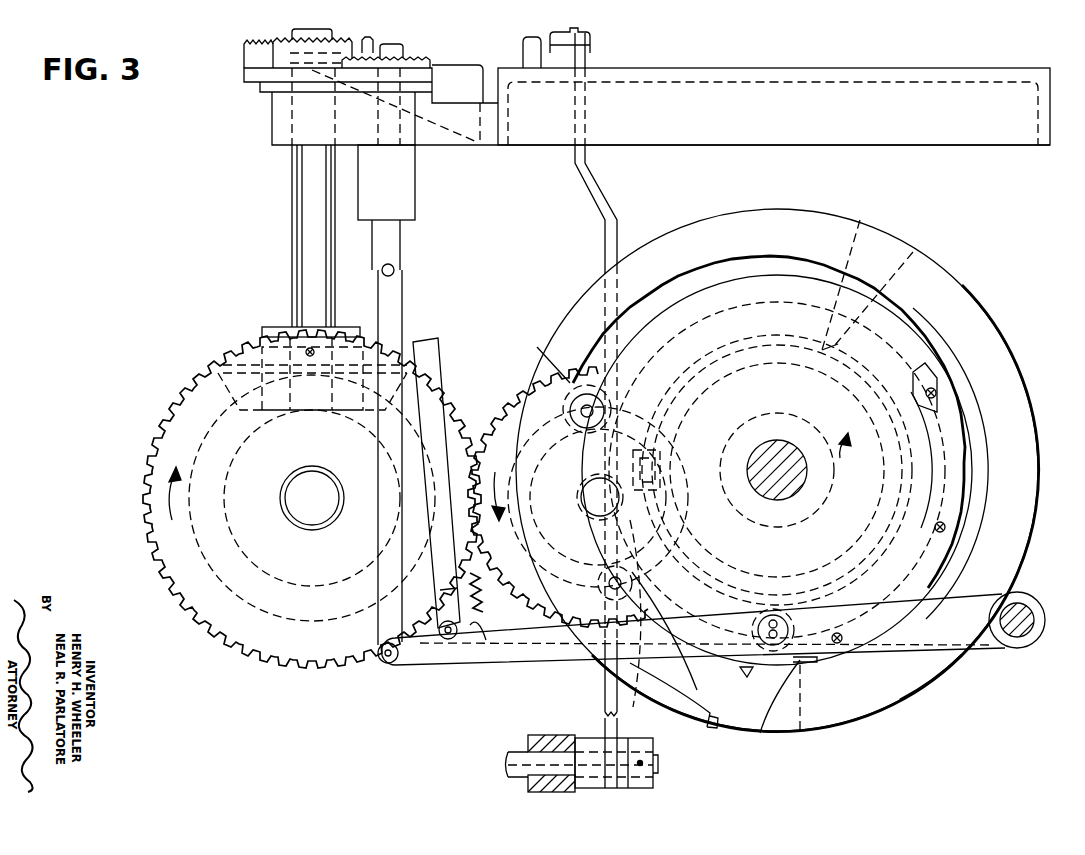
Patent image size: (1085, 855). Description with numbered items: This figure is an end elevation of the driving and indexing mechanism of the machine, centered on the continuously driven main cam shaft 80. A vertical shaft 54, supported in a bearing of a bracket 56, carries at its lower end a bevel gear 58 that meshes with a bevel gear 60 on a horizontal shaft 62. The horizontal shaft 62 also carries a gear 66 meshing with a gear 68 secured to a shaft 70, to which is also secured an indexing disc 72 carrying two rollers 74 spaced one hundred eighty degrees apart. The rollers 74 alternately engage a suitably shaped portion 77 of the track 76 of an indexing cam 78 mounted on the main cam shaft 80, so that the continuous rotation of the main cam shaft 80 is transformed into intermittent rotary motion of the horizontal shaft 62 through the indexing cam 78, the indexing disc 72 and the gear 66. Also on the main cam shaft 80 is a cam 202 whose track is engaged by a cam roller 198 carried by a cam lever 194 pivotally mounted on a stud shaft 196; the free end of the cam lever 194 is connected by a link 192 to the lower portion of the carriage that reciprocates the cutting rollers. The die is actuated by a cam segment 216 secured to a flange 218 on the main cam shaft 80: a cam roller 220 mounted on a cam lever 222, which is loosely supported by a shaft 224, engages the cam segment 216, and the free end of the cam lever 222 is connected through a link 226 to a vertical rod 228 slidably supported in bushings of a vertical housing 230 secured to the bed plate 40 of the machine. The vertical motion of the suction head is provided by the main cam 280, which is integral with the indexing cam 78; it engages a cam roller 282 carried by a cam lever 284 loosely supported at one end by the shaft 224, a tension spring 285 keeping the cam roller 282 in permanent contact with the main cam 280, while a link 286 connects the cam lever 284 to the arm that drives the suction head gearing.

The bed plate 40 is at (923, 148).
The vertical shaft 54 is at (292, 262).
The bracket 56 is at (272, 122).
The bevel gear 58 is at (222, 375).
The bevel gear 60 is at (247, 603).
The horizontal shaft 62 is at (316, 518).
The gear 66 is at (256, 660).
The gear 68 is at (537, 410).
The shaft 70 is at (572, 404).
The indexing disc 72 is at (575, 393).
The rollers 74 is at (560, 372).
The track 76 is at (860, 668).
The shaped portion 77 is at (712, 729).
The indexing cam 78 is at (915, 680).
The main cam shaft 80 is at (792, 446).
The link 192 is at (523, 42).
The cam lever 194 is at (617, 212).
The stud shaft 196 is at (658, 764).
The cam roller 198 is at (688, 421).
The cam 202 is at (866, 230).
The cam segment 216 is at (954, 345).
The flange 218 is at (932, 370).
The cam roller 220 is at (748, 663).
The cam lever 222 is at (490, 655).
The shaft 224 is at (1001, 647).
The link 226 is at (402, 298).
The vertical rod 228 is at (400, 240).
The vertical housing 230 is at (415, 170).
The main cam 280 is at (905, 266).
The cam roller 282 is at (801, 733).
The cam lever 284 is at (477, 628).
The tension spring 285 is at (484, 598).
The link 286 is at (433, 362).